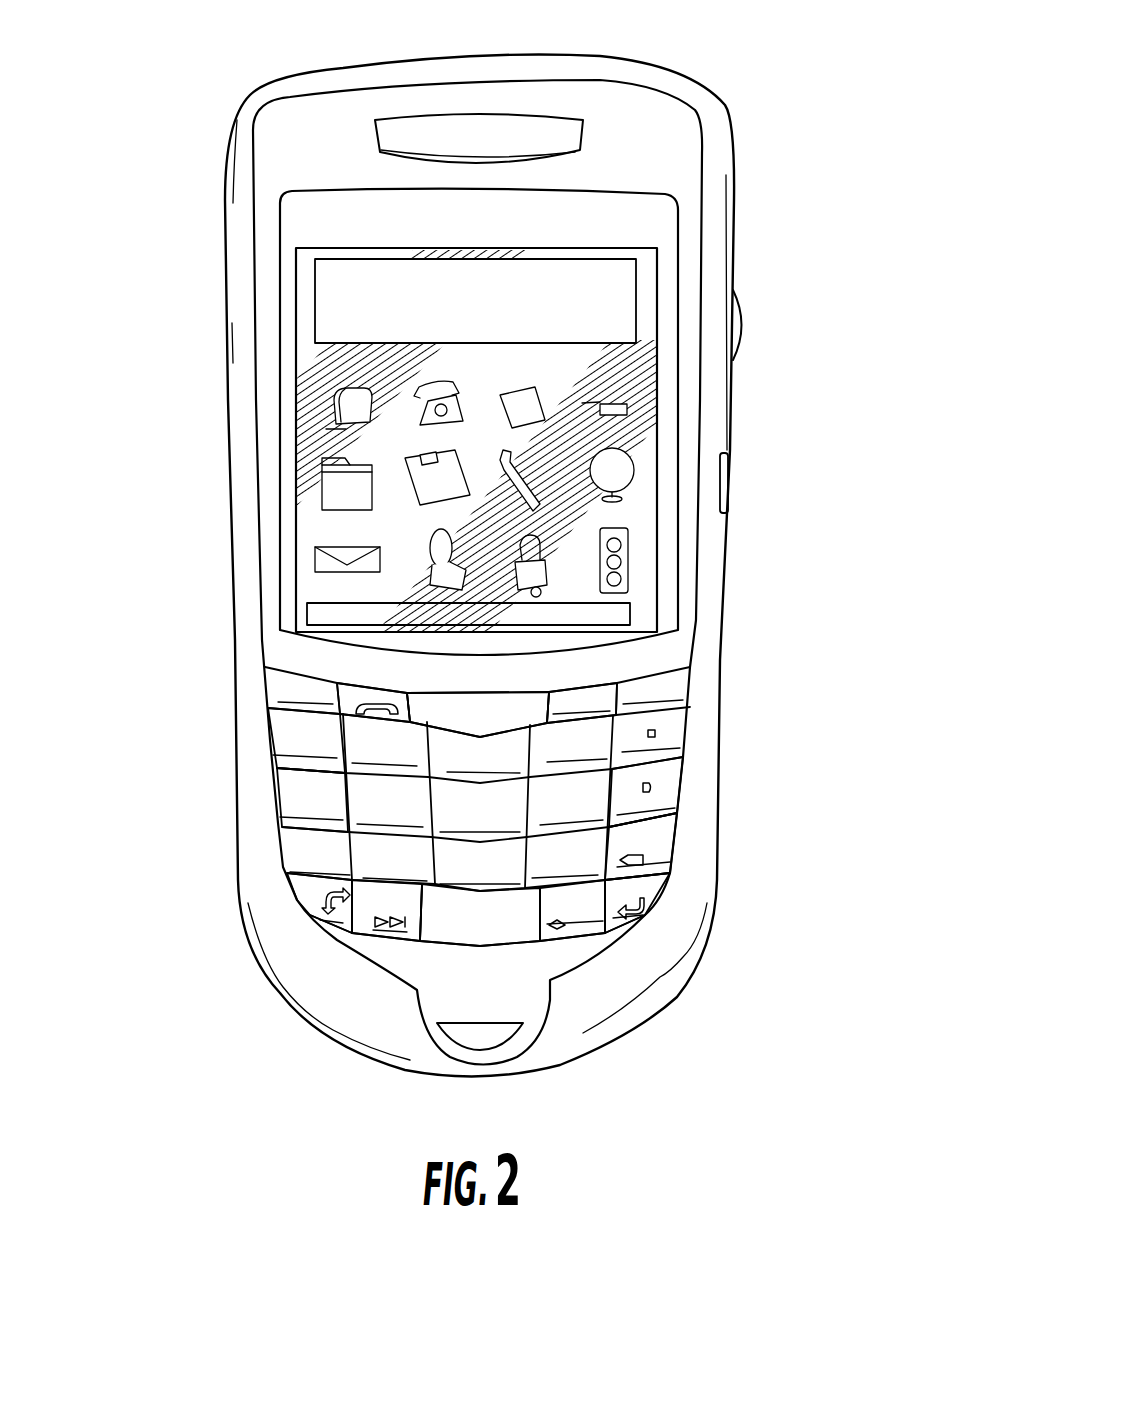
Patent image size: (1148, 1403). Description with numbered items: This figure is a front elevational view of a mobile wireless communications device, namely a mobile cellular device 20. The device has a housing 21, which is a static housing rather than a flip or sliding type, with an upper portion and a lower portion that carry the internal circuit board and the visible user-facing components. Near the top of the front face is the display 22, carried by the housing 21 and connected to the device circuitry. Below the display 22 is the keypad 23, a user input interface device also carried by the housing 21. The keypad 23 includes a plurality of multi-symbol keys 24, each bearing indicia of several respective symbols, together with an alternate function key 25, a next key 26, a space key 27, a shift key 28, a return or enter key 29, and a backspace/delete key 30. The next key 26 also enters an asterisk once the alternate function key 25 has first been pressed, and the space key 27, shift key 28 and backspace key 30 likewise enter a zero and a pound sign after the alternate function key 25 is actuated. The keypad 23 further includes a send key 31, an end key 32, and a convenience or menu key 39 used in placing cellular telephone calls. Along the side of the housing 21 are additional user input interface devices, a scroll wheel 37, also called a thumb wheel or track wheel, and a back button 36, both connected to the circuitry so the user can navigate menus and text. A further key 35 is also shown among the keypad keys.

The mobile cellular device 20 is at (790, 55).
The housing 21 is at (275, 92).
The display 22 is at (310, 352).
The keypad 23 is at (693, 730).
The multi-symbol keys 24 is at (290, 787).
The alternate function key 25 is at (313, 910).
The next key 26 is at (367, 928).
The space key 27 is at (437, 935).
The shift key 28 is at (580, 927).
The return key 29 is at (648, 897).
The backspace/delete key 30 is at (667, 847).
The send key 31 is at (345, 688).
The end key 32 is at (587, 695).
The key 35 is at (673, 793).
The back button 36 is at (729, 485).
The scroll wheel 37 is at (743, 330).
The convenience key 39 is at (503, 705).